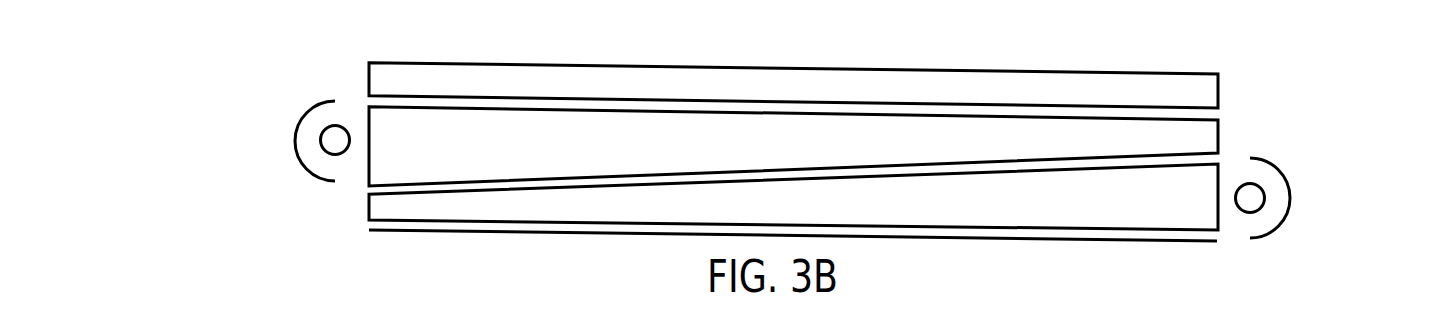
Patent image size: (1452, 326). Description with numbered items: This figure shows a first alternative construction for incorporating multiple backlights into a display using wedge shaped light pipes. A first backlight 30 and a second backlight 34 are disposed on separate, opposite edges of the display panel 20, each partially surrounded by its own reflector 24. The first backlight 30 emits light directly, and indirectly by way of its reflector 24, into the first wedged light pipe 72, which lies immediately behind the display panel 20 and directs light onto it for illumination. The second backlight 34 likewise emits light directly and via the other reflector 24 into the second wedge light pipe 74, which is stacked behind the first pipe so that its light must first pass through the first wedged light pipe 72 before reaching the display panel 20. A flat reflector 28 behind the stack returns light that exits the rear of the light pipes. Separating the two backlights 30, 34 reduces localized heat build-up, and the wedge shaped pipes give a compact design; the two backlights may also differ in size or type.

The display panel 20 is at (1207, 90).
The first wedged light pipe 72 is at (1210, 132).
The second wedge light pipe 74 is at (1188, 222).
The flat reflector 28 is at (1130, 242).
The first backlight 30 is at (333, 142).
The second backlight 34 is at (1253, 195).
The reflector 24 is at (295, 164).